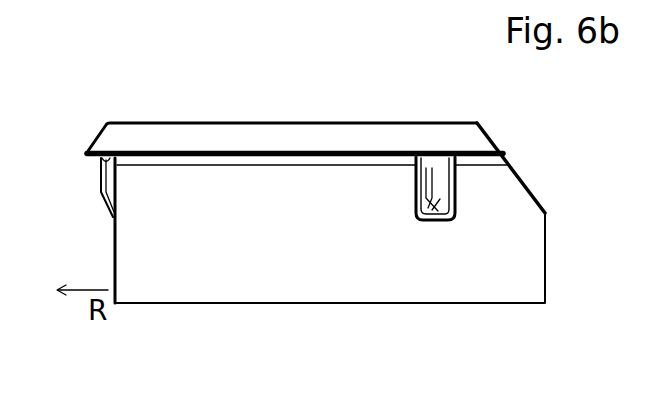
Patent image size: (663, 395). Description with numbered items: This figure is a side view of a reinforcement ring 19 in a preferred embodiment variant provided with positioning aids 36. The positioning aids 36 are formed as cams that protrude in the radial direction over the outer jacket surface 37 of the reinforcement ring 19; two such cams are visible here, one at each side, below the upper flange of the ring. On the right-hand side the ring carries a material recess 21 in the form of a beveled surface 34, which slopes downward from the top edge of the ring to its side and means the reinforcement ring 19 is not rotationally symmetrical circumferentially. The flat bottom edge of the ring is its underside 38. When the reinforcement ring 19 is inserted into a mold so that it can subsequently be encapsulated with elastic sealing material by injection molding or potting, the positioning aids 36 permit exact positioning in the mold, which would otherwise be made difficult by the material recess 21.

The reinforcement ring 19 is at (141, 117).
The material recess 21 is at (344, 132).
The beveled surface 34 is at (523, 174).
The positioning aids 36 is at (103, 187).
The outer jacket surface 37 is at (102, 243).
The underside 38 is at (236, 298).